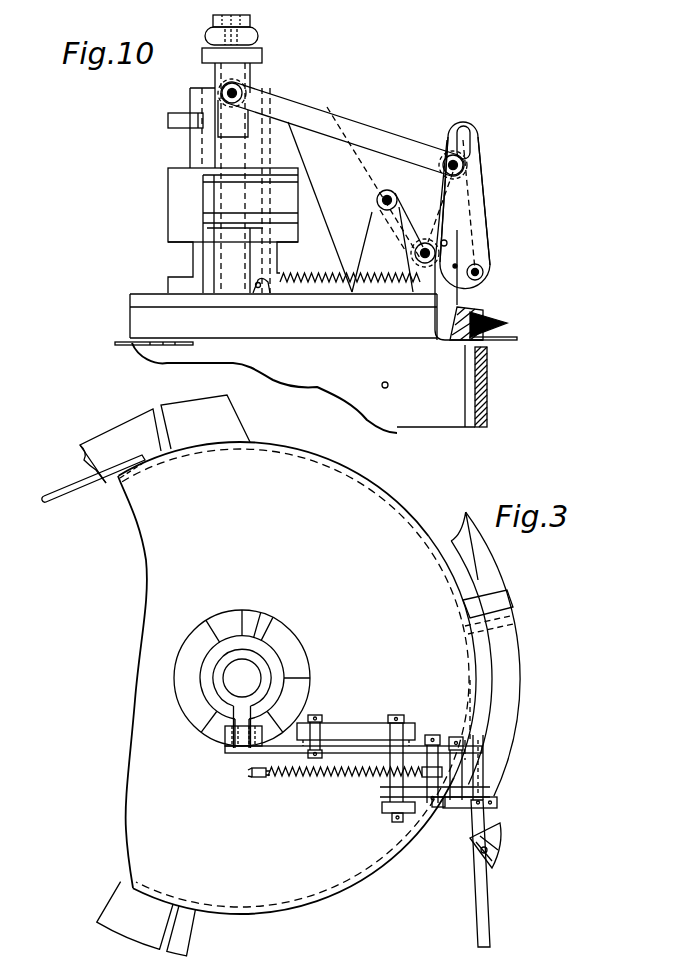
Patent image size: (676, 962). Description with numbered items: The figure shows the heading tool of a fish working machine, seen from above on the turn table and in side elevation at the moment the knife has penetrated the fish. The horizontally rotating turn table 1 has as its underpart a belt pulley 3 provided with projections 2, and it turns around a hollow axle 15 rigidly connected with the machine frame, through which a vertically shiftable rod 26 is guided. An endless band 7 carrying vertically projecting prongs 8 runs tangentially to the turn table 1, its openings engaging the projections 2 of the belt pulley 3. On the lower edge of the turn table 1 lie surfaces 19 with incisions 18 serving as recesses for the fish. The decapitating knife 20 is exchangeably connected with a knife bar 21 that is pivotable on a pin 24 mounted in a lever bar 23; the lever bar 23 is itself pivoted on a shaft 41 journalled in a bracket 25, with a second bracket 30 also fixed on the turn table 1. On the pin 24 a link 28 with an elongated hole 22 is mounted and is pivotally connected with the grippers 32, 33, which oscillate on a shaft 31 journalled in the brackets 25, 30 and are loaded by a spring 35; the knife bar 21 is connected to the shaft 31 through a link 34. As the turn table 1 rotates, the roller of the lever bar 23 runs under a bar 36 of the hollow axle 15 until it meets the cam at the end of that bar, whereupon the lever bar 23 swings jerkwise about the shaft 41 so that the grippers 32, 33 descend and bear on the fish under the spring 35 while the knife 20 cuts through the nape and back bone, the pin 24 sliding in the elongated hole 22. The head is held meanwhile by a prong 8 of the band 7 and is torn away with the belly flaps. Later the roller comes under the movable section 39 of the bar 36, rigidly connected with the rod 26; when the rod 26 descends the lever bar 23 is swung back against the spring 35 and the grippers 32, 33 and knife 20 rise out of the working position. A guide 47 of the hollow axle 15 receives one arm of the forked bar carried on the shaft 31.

In FIG. 10, the turn table 1 is at (143, 317).
In FIG. 10, the projections 2 is at (388, 383).
In FIG. 10, the belt pulley 3 is at (338, 388).
In FIG. 10, the endless band 7 is at (492, 363).
In FIG. 3, the endless band 7 is at (78, 485).
In FIG. 10, the prongs 8 is at (487, 303).
In FIG. 3, the prongs 8 is at (497, 843).
In FIG. 10, the hollow axle 15 is at (180, 197).
In FIG. 3, the incisions 18 is at (180, 405).
In FIG. 10, the surfaces 19 is at (132, 345).
In FIG. 3, the surfaces 19 is at (127, 427).
In FIG. 10, the decapitating knife 20 is at (443, 318).
In FIG. 3, the decapitating knife 20 is at (452, 800).
In FIG. 10, the knife bar 21 is at (470, 220).
In FIG. 3, the knife bar 21 is at (498, 801).
In FIG. 10, the elongated hole 22 is at (472, 142).
In FIG. 10, the lever bar 23 is at (365, 128).
In FIG. 3, the lever bar 23 is at (267, 752).
In FIG. 10, the pin 24 is at (464, 165).
In FIG. 3, the pin 24 is at (458, 742).
In FIG. 10, the bracket 25 is at (343, 243).
In FIG. 3, the bracket 25 is at (340, 723).
In FIG. 10, the vertical rod 26 is at (223, 70).
In FIG. 3, the vertical rod 26 is at (300, 643).
In FIG. 10, the link 28 is at (460, 123).
In FIG. 10, the bracket 30 is at (377, 233).
In FIG. 3, the bracket 30 is at (392, 817).
In FIG. 10, the shaft 31 is at (377, 193).
In FIG. 3, the shaft 31 is at (397, 715).
In FIG. 10, the gripper 32 is at (480, 292).
In FIG. 3, the gripper 32 is at (420, 740).
In FIG. 3, the gripper 33 is at (383, 805).
In FIG. 10, the link 34 is at (407, 210).
In FIG. 3, the link 34 is at (383, 793).
In FIG. 10, the spring 35 is at (327, 288).
In FIG. 3, the spring 35 is at (297, 778).
In FIG. 10, the bar 36 is at (168, 121).
In FIG. 10, the movable section 39 is at (257, 56).
In FIG. 3, the movable section 39 is at (223, 733).
In FIG. 10, the shaft 41 is at (307, 107).
In FIG. 3, the shaft 41 is at (315, 715).
In FIG. 10, the guide 47 is at (193, 258).